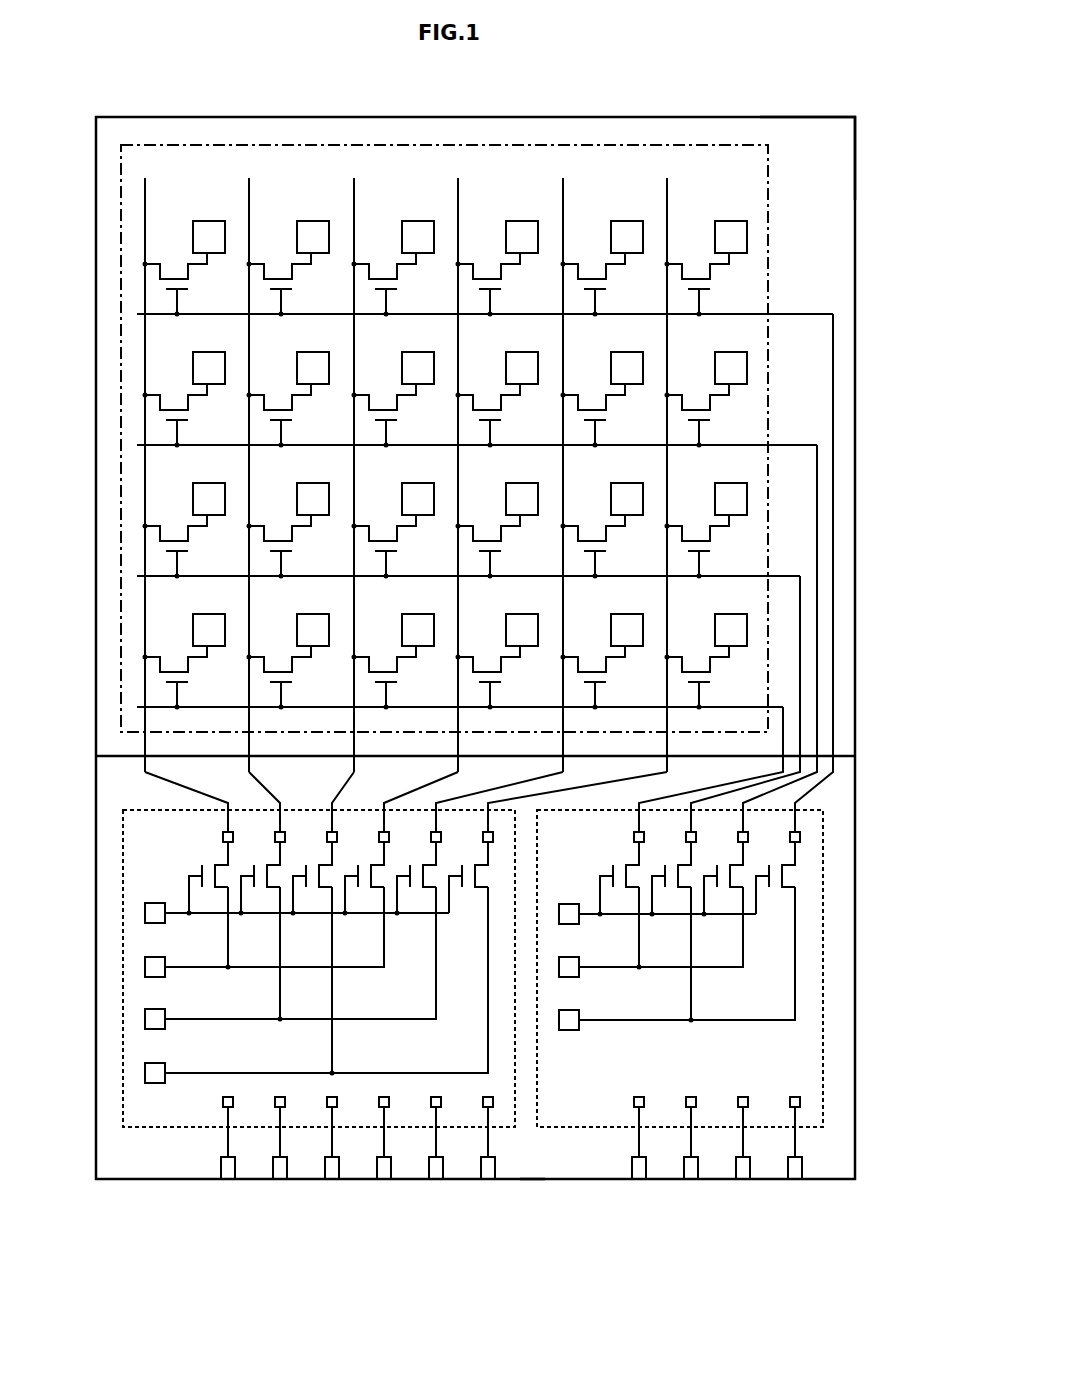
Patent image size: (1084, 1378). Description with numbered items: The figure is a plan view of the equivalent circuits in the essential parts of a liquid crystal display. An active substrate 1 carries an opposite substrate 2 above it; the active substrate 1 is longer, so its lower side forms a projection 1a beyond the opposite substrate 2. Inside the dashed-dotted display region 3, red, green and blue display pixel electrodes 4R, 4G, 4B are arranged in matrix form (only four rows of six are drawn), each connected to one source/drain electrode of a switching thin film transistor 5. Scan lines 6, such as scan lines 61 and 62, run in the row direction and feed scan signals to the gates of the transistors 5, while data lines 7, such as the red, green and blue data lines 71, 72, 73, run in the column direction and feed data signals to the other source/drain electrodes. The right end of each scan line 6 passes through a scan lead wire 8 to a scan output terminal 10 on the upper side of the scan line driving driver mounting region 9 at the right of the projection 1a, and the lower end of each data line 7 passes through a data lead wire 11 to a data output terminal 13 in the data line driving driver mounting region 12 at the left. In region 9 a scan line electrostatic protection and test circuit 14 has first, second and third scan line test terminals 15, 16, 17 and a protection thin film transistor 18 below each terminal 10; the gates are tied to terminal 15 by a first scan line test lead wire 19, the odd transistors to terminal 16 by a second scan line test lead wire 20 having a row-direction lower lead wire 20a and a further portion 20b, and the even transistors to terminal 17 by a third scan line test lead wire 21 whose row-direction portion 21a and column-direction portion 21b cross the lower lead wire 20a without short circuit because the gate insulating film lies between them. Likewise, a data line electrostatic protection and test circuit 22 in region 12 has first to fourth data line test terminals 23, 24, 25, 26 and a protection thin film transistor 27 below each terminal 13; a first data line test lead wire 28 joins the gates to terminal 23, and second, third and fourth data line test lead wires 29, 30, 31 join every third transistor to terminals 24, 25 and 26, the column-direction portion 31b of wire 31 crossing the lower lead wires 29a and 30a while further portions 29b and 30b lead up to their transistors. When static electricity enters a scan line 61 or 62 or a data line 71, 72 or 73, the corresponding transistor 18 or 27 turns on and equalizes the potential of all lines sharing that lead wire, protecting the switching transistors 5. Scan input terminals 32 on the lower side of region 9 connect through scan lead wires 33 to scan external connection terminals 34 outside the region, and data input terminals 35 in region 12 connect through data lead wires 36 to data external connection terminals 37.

The active substrate 1 is at (843, 1160).
The projection 1a is at (533, 1163).
The opposite substrate 2 is at (813, 135).
The display region 3 is at (684, 138).
The red display pixel electrode 4R is at (193, 241).
The green display pixel electrode 4G is at (297, 241).
The blue display pixel electrode 4B is at (402, 241).
The switching thin film transistor 5 is at (203, 274).
The scan line 6 is at (160, 316).
The scan line 61 is at (329, 706).
The scan line 62 is at (268, 578).
The data line 7 is at (147, 202).
The data line 71 is at (147, 338).
The data line 72 is at (247, 432).
The data line 73 is at (356, 331).
The scan lead wire 8 is at (835, 348).
The scan line driving driver mounting region 9 is at (577, 1128).
The scan output terminal 10 is at (634, 838).
The data lead wire 11 is at (600, 794).
The data line driving driver mounting region 12 is at (150, 1128).
The data output terminal 13 is at (431, 838).
The scan line electrostatic protection and test circuit 14 is at (717, 1052).
The first scan line test terminal 15 is at (578, 926).
The second scan line test terminal 16 is at (578, 979).
The third scan line test terminal 17 is at (570, 1032).
The scan line electrostatic protection and test thin film transistor 18 is at (604, 862).
The first scan line test lead wire 19 is at (667, 915).
The second scan line test lead wire 20 is at (723, 968).
The lower lead wire 20a is at (663, 968).
The wiring portion 20b is at (745, 930).
The third scan line test lead wire 21 is at (770, 1021).
The row-direction portion 21a is at (662, 1021).
The column-direction portion 21b is at (692, 925).
The data line electrostatic protection and test circuit 22 is at (354, 1086).
The first data line test terminal 23 is at (145, 913).
The second data line test terminal 24 is at (145, 967).
The third data line test terminal 25 is at (145, 1019).
The fourth data line test terminal 26 is at (145, 1073).
The data line electrostatic protection and test thin film transistor 27 is at (186, 866).
The first data line test lead wire 28 is at (255, 914).
The second data line test lead wire 29 is at (360, 968).
The lower lead wire 29a is at (250, 968).
The wiring portion 29b is at (385, 928).
The third data line test lead wire 30 is at (360, 1020).
The lower lead wire 30a is at (228, 1020).
The wiring portion 30b is at (437, 950).
The fourth data line test lead wire 31 is at (447, 1072).
The column-direction portion 31b is at (330, 1055).
The scan input terminal 32 is at (640, 1102).
The scan lead wire 33 is at (692, 1137).
The scan external connection terminal 34 is at (642, 1176).
The data input terminal 35 is at (233, 1102).
The data lead wire 36 is at (228, 1135).
The data external connection terminal 37 is at (230, 1176).